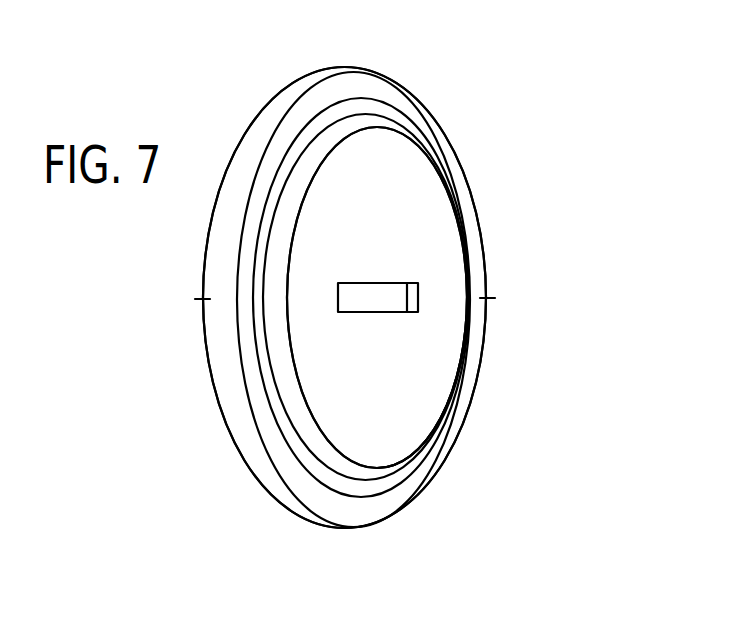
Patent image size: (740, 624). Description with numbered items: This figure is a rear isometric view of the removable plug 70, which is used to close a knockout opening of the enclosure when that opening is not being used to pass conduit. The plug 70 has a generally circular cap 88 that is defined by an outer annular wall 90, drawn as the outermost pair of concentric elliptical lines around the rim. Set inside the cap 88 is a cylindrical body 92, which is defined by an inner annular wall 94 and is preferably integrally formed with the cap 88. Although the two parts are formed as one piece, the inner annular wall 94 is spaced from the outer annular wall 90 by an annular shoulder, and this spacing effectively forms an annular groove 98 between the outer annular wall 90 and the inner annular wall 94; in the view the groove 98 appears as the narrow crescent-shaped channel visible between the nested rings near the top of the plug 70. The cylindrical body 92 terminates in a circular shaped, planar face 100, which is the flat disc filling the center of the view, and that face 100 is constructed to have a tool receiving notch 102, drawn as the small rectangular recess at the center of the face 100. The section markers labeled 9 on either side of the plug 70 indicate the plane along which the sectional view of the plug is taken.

The plug 70 is at (488, 77).
The circular cap 88 is at (222, 125).
The outer annular wall 90 is at (270, 433).
The cylindrical body 92 is at (417, 208).
The inner annular wall 94 is at (285, 374).
The annular groove 98 is at (373, 115).
The planar face 100 is at (420, 413).
The tool receiving notch 102 is at (373, 298).
The section line 9- 9 is at (182, 299).